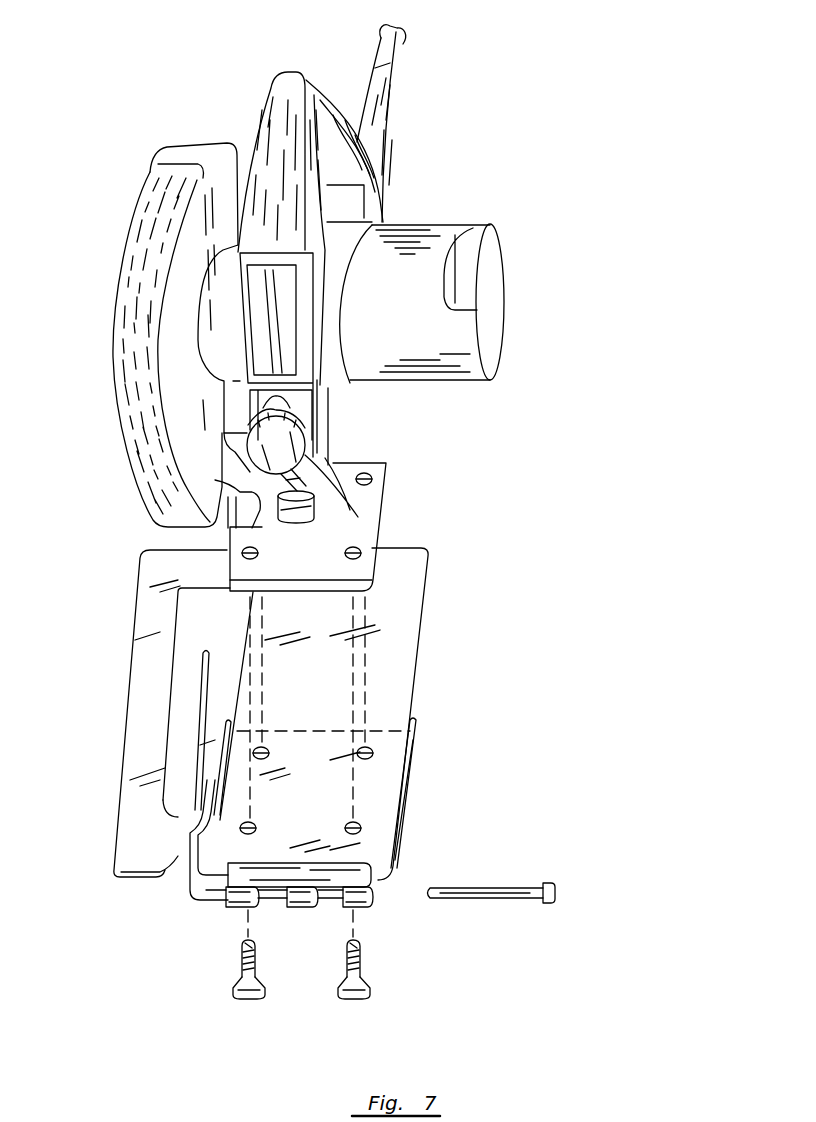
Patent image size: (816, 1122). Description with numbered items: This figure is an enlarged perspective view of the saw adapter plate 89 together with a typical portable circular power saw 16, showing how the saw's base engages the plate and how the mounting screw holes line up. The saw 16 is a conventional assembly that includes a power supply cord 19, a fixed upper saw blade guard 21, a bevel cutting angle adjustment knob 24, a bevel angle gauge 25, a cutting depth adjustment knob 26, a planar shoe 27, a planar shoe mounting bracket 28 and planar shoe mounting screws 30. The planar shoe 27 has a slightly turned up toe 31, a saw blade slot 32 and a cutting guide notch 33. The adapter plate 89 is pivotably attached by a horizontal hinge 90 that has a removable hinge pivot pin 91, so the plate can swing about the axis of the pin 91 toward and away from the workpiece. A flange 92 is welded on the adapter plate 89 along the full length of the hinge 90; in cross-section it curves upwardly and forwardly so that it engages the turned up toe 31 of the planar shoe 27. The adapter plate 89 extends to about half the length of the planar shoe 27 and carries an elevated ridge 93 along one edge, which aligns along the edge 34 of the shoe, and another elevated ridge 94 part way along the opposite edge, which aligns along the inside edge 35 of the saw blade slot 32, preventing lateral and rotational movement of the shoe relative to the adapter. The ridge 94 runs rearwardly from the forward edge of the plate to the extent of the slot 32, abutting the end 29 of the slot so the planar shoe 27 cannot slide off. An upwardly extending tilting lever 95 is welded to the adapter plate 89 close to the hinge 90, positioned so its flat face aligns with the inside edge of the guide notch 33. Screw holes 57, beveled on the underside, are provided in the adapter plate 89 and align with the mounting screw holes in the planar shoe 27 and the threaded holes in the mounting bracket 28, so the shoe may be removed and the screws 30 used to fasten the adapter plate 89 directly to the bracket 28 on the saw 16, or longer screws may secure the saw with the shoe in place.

The portable circular power saw 16 is at (433, 210).
The power supply cord 19 is at (391, 58).
The fixed upper saw blade guard 21 is at (110, 338).
The bevel cutting angle adjustment knob 24 is at (316, 518).
The bevel angle gauge 25 is at (300, 480).
The cutting depth adjustment knob 26 is at (305, 424).
The planar shoe 27 is at (140, 553).
The planar shoe mounting bracket 28 is at (386, 480).
The end of slot 29 is at (160, 805).
The planar shoe mounting screws 30 is at (237, 970).
The turned up toe 31 is at (214, 883).
The saw blade slot 32 is at (185, 698).
The cutting guide notch 33 is at (186, 862).
The edge of the planar shoe 34 is at (427, 597).
The inside edge of the saw blade slot 35 is at (243, 643).
The screw holes 57 is at (370, 755).
The saw adapter plate 89 is at (404, 813).
The horizontal hinge 90 is at (360, 907).
The hinge pivot pin 91 is at (477, 892).
The flange 92 is at (348, 860).
The elevated ridge 93 is at (417, 728).
The elevated ridge 94 is at (224, 752).
The tilting lever 95 is at (200, 657).